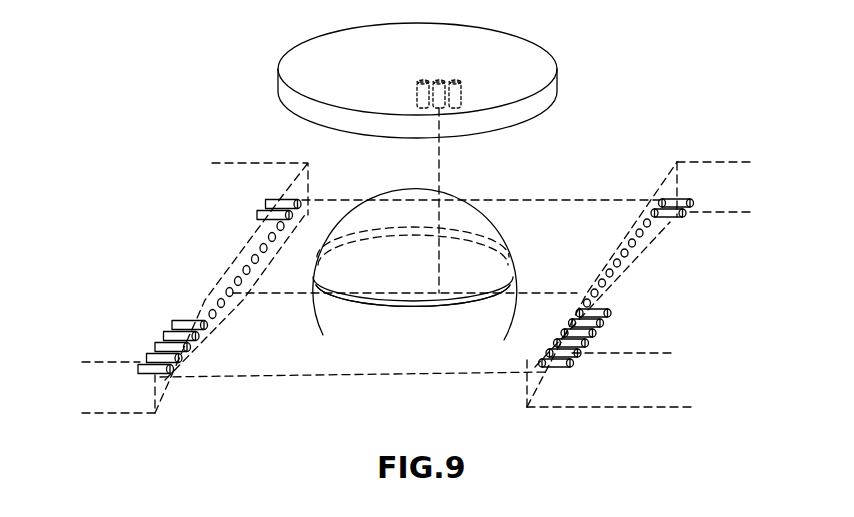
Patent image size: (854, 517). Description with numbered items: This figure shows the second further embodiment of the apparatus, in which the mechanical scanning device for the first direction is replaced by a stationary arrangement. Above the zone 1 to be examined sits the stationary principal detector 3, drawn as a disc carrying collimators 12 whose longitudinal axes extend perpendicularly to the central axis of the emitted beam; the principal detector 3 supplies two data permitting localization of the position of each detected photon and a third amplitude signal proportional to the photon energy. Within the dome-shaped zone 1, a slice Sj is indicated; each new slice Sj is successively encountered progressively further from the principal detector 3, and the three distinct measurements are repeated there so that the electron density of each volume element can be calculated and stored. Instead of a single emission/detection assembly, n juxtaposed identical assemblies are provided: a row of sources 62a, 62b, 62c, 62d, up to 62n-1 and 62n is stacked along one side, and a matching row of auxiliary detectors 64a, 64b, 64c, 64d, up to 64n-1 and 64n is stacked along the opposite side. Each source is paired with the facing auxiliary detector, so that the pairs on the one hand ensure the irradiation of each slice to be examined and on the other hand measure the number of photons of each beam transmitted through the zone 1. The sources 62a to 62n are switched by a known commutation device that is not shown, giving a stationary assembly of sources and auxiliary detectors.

The principal detector 3 is at (299, 67).
The collimators 12 is at (441, 80).
The zone to be examined 1 is at (328, 312).
The slice Sj is at (402, 305).
The source 62a is at (138, 368).
The source 62b is at (147, 357).
The source 62c is at (155, 346).
The source 62d is at (163, 335).
The source 62n-1 is at (257, 215).
The source 62n is at (265, 204).
The auxiliary detector 64a is at (570, 368).
The auxiliary detector 64b is at (578, 356).
The auxiliary detector 64c is at (587, 346).
The auxiliary detector 64d is at (594, 335).
The auxiliary detector 64n-1 is at (678, 216).
The auxiliary detector 64n is at (691, 204).